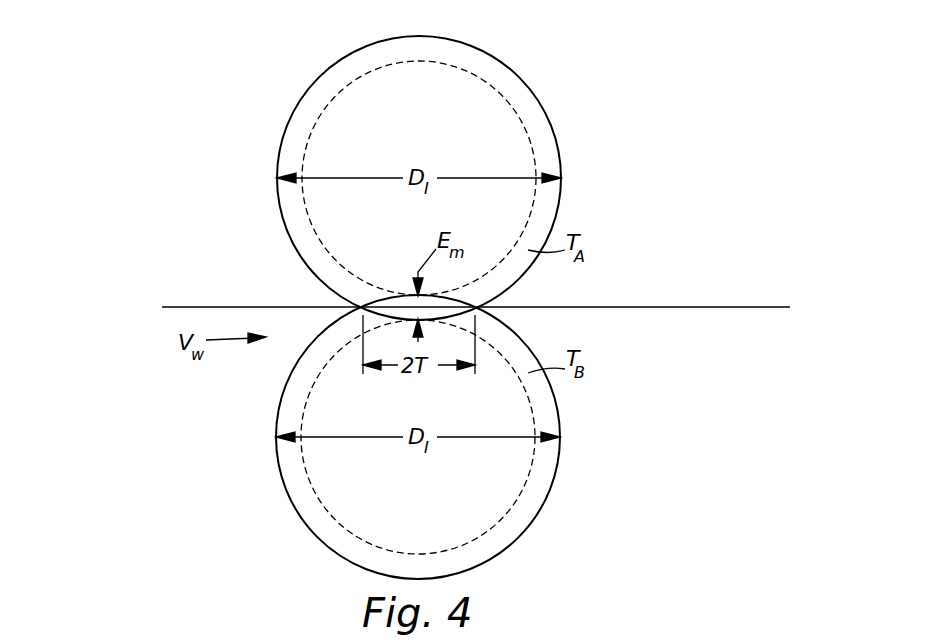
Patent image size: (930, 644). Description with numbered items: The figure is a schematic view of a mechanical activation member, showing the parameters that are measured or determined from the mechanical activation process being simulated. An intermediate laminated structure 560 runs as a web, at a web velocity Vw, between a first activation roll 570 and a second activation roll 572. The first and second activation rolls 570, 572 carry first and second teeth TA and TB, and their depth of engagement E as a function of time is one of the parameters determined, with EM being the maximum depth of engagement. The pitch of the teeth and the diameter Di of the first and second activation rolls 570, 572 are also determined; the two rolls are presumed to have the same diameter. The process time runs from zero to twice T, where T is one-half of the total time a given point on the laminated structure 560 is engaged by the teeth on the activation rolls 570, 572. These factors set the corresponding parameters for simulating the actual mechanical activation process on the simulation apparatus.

The intermediate laminated structure 560 is at (237, 306).
The first activation roll 570 is at (528, 105).
The second activation roll 572 is at (532, 497).